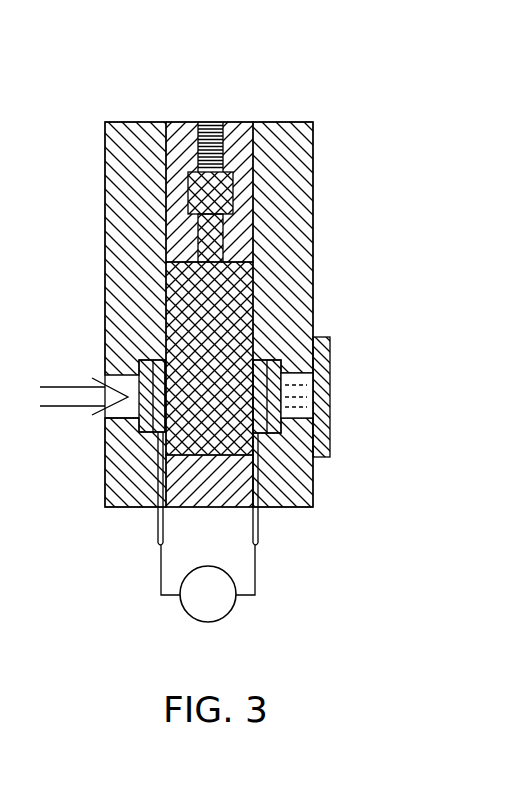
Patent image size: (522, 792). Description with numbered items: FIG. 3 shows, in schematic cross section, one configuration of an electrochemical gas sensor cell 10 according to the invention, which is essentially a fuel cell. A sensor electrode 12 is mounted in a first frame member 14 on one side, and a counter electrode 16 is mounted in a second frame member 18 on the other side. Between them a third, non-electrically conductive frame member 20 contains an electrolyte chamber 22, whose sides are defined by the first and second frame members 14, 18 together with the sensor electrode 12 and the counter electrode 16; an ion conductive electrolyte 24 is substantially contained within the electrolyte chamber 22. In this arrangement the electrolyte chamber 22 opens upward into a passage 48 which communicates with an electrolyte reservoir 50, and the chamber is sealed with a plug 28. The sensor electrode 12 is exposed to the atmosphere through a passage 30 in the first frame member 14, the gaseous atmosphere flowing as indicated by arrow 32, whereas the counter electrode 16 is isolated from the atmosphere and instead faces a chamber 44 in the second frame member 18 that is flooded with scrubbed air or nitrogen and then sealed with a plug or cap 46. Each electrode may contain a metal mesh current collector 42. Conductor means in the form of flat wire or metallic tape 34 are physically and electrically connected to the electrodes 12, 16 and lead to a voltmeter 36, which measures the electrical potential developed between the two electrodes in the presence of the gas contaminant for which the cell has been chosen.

The electrochemical gas sensor cell 10 is at (302, 65).
The sensor electrode 12 is at (135, 422).
The first frame member 14 is at (113, 185).
The counter electrode 16 is at (277, 508).
The second frame member 18 is at (305, 231).
The third frame member 20 is at (212, 506).
The electrolyte chamber 22 is at (165, 287).
The ion conductive electrolyte 24 is at (255, 272).
The plug 28 is at (215, 118).
The passage 30 is at (100, 378).
The arrow 32 is at (63, 397).
The flat wire or metallic tape 34 is at (157, 542).
The voltmeter 36 is at (208, 623).
The metal mesh current collector 42 is at (153, 355).
The chamber 44 is at (316, 460).
The plug or cap 46 is at (329, 396).
The passage 48 is at (215, 220).
The electrolyte reservoir 50 is at (238, 193).